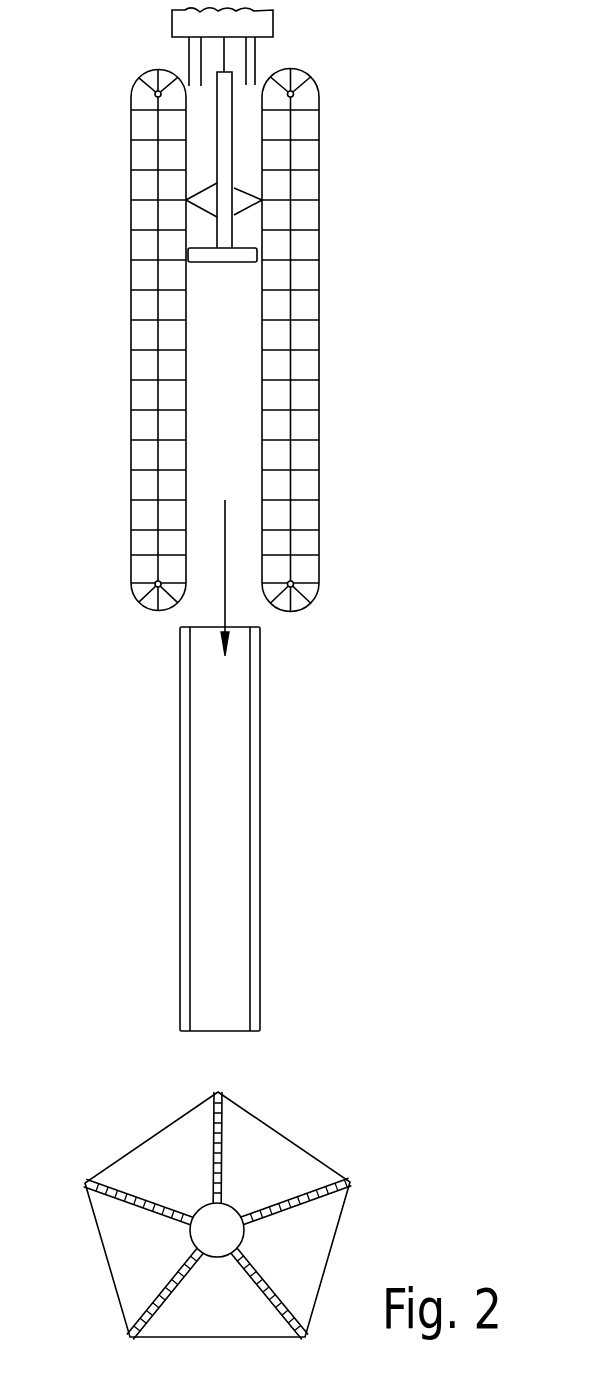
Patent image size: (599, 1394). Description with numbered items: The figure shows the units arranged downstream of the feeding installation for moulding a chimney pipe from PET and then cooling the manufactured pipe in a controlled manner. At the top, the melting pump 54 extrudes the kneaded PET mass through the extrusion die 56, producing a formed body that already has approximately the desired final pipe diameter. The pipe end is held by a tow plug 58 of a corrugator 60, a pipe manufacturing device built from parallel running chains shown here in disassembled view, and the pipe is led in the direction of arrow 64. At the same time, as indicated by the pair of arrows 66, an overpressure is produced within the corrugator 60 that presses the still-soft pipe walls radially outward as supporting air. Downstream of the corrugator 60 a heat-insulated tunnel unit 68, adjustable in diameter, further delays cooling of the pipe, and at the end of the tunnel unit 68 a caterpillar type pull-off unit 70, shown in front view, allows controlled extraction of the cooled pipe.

The melting pump 54 is at (185, 21).
The extrusion die 56 is at (193, 57).
The tow plug 58 is at (223, 232).
The corrugator 60 is at (336, 474).
The arrow 64 is at (225, 563).
The pair of arrows 66 is at (240, 202).
The tunnel unit 68 is at (218, 713).
The pull-off unit 70 is at (280, 1165).